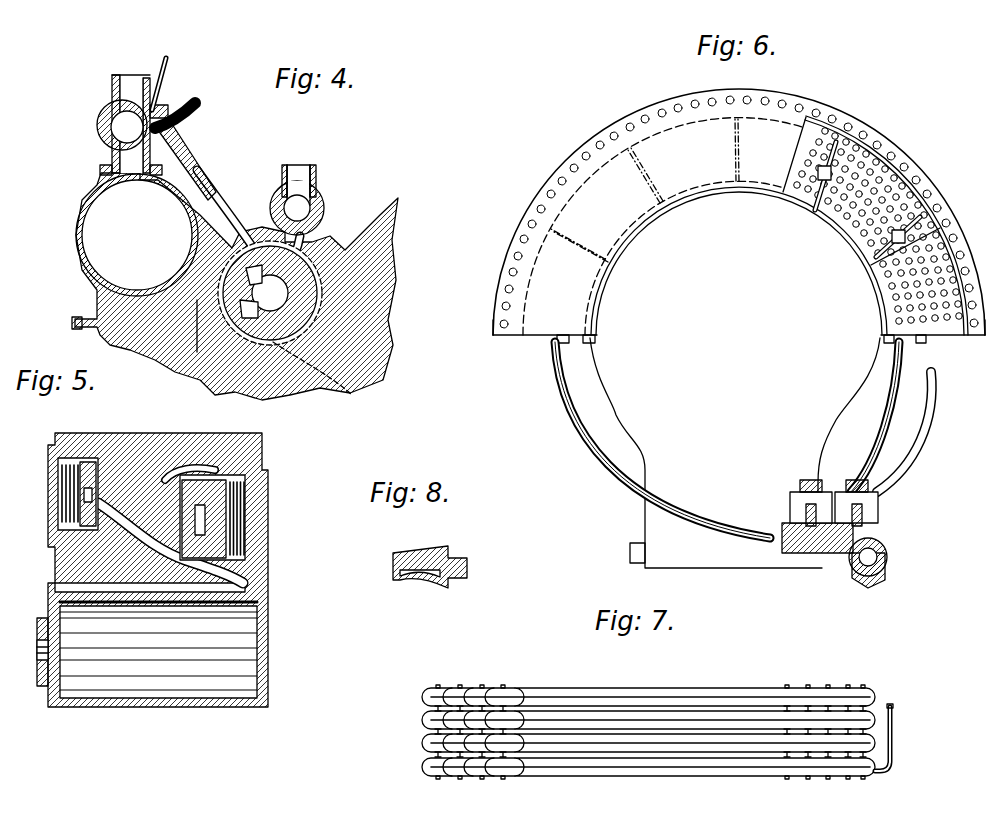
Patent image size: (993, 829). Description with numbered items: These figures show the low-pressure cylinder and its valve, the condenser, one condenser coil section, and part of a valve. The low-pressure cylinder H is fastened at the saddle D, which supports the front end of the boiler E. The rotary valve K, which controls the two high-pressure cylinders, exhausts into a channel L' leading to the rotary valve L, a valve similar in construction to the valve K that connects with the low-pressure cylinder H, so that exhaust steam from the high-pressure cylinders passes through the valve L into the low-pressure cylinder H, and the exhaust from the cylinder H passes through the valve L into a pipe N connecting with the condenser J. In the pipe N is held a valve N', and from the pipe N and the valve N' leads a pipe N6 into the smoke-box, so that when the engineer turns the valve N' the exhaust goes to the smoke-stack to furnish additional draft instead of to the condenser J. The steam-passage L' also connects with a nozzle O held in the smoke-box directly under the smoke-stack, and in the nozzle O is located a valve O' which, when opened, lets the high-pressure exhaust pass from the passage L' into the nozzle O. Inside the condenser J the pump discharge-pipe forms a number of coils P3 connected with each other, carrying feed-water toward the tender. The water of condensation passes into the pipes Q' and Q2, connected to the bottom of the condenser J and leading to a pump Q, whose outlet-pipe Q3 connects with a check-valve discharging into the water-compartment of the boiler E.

In FIG. 4, the saddle D is at (398, 243).
In FIG. 4, the low-pressure cylinder H is at (95, 255).
In FIG. 5, the low-pressure cylinder H is at (250, 660).
In FIG. 4, the channel L' is at (279, 332).
In FIG. 4, the rotary valve L is at (327, 381).
In FIG. 5, the rotary valve L is at (234, 517).
In FIG. 4, the nozzle O is at (309, 174).
In FIG. 4, the valve O' is at (312, 200).
In FIG. 4, the pipe N is at (138, 136).
In FIG. 4, the valve N' is at (99, 125).
In FIG. 8, the valve N' is at (431, 550).
In FIG. 4, the boiler E is at (176, 68).
In FIG. 4, the pipe N6 is at (186, 123).
In FIG. 5, the rotary valve K is at (48, 498).
In FIG. 6, the condenser J is at (904, 162).
In FIG. 6, the pipe Q2 is at (662, 440).
In FIG. 6, the pipe Q' is at (903, 417).
In FIG. 6, the outlet-pipe Q3 is at (928, 425).
In FIG. 6, the pump Q is at (850, 534).
In FIG. 7, the coils P3 is at (728, 690).